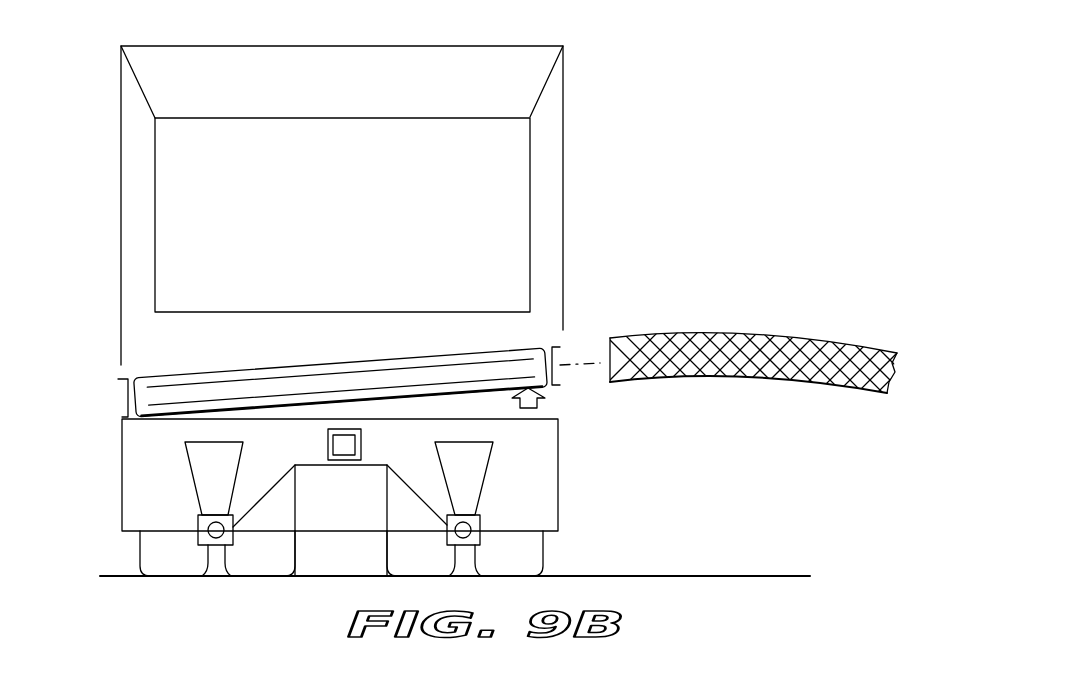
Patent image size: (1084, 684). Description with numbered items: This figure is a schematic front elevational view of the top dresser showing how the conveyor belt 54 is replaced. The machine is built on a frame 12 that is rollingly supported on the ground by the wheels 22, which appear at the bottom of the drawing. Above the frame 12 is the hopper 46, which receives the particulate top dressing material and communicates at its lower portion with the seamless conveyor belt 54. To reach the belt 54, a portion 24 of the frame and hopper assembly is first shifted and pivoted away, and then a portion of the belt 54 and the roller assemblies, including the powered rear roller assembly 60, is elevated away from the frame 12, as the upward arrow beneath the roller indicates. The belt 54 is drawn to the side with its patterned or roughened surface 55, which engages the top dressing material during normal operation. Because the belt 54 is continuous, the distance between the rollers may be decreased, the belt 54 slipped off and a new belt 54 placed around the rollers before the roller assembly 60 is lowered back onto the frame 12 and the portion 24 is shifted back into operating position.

The frame 12 is at (548, 462).
The wheels 22 is at (200, 557).
The portion of the frame and hopper assembly 24 is at (568, 128).
The hopper 46 is at (553, 206).
The conveyor belt 54 is at (707, 335).
The belt material pattern 55 is at (753, 381).
The powered rear roller assembly 60 is at (527, 346).